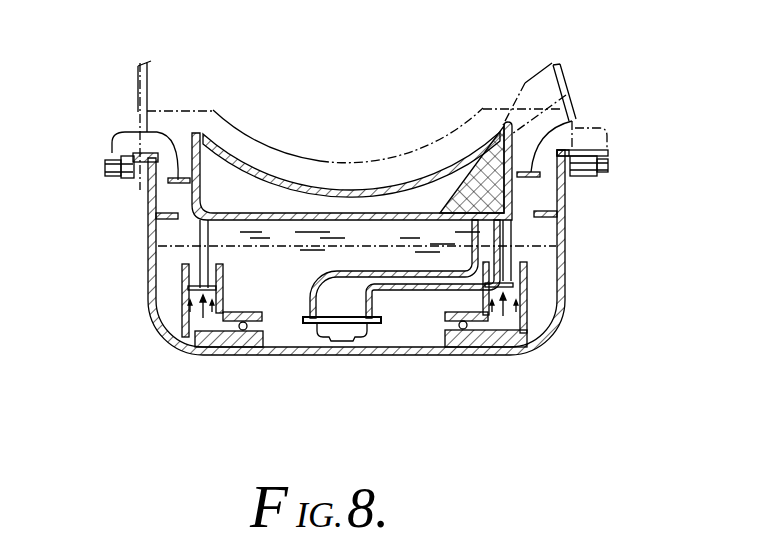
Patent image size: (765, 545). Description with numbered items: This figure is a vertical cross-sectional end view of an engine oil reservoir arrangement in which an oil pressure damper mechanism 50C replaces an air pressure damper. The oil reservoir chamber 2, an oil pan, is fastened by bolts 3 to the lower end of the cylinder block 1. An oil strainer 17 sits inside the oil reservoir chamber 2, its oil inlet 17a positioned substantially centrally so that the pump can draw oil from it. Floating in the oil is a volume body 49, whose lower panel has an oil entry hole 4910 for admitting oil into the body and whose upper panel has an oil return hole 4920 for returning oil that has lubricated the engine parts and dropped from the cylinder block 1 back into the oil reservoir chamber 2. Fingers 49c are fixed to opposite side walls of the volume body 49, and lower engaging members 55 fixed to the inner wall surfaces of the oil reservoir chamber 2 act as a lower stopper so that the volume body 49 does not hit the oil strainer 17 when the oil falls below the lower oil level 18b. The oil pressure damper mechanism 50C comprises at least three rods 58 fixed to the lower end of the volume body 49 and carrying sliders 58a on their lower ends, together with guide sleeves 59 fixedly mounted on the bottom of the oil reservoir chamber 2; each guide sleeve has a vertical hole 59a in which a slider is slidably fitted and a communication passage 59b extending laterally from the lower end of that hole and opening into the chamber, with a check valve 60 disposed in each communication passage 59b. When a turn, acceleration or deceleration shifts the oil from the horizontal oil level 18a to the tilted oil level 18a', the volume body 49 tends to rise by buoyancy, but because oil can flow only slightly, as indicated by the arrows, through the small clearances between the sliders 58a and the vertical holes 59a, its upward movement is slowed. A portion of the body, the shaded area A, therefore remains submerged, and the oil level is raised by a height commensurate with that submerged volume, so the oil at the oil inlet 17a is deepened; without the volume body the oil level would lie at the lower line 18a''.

The cylinder block 1 is at (575, 78).
The oil reservoir chamber 2 is at (160, 328).
The bolts 3 is at (118, 180).
The oil strainer 17 is at (384, 300).
The oil inlet 17a is at (343, 345).
The horizontal oil level 18a is at (317, 215).
The tilted oil level 18a' is at (376, 320).
The oil level without volume body 18a'' is at (451, 311).
The lower oil level 18b is at (556, 250).
The volume body 49 is at (265, 165).
The fingers 49c is at (142, 128).
The oil entry hole 4910 is at (347, 220).
The oil return hole 4920 is at (352, 188).
The oil pressure damper mechanism 50C is at (170, 302).
The lower engaging members 55 is at (172, 230).
The rods 58 is at (312, 160).
The sliders 58a is at (180, 288).
The guide sleeves 59 is at (172, 346).
The vertical holes 59a is at (200, 350).
The communication passages 59b is at (268, 330).
The check valves 60 is at (242, 332).
The shaded area A is at (480, 160).